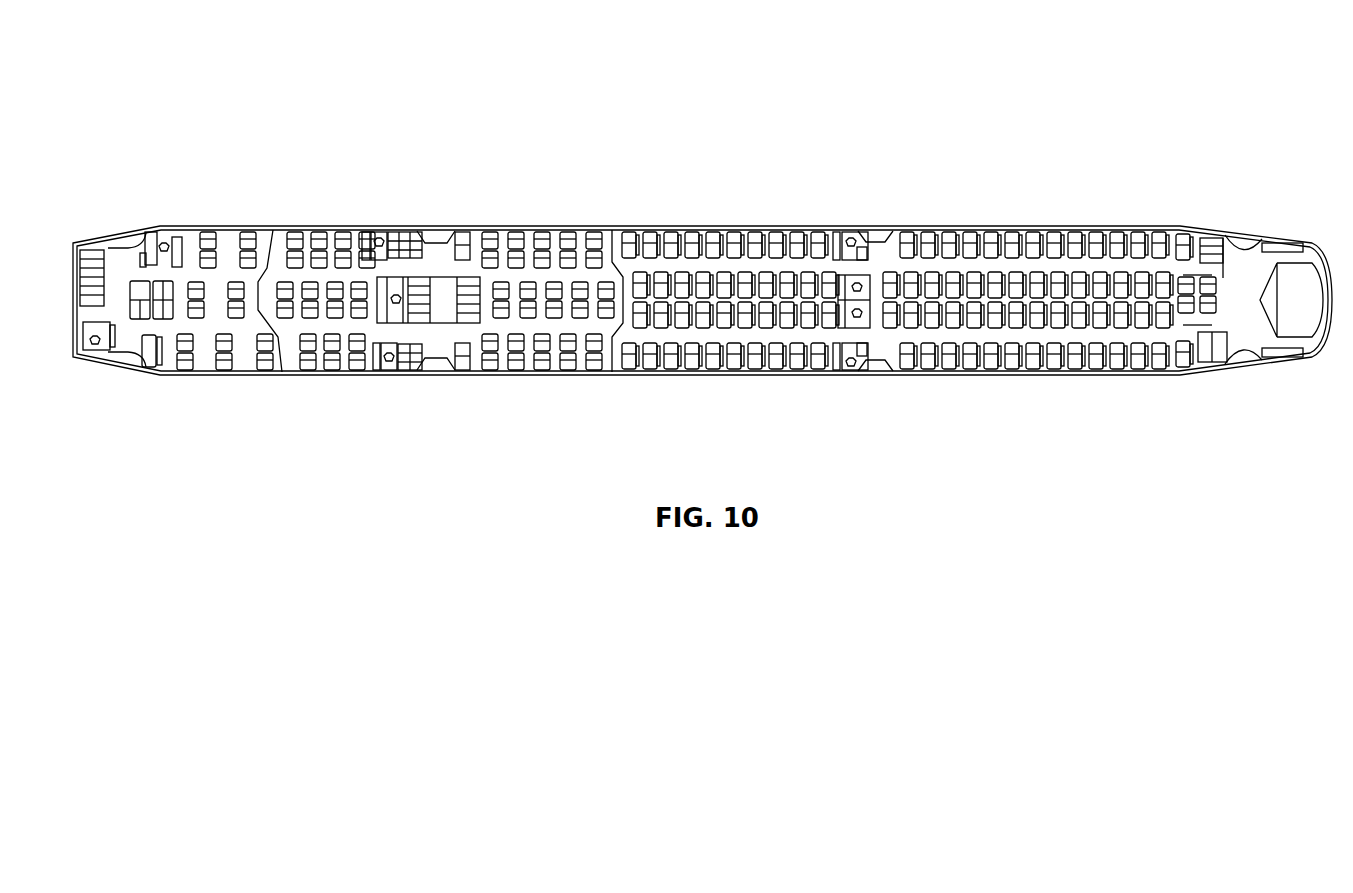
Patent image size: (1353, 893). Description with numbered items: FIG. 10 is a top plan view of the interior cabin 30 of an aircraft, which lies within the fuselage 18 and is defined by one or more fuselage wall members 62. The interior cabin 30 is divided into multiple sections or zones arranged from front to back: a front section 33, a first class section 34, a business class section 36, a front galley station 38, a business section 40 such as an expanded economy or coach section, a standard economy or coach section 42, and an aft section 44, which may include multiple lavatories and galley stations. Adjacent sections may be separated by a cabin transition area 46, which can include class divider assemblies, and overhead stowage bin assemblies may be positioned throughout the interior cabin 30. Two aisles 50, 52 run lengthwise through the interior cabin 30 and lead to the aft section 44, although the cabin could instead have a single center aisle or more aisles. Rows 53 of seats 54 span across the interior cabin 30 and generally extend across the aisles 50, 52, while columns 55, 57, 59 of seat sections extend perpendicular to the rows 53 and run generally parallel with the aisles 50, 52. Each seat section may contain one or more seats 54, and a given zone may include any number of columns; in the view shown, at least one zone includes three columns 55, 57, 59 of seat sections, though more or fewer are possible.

The interior cabin 30 is at (217, 128).
The fuselage 18 is at (557, 188).
The cabin transition area 46 is at (150, 225).
The business class section 36 is at (307, 224).
The fuselage wall member 62 is at (507, 223).
The column of seat sections 59 is at (627, 238).
The column of seat sections 57 is at (638, 276).
The standard economy or coach section 42 is at (684, 222).
The aisle 50 is at (1041, 272).
The aft section 44 is at (1249, 231).
The front section 33 is at (135, 388).
The first class section 34 is at (240, 381).
The front galley station 38 is at (434, 381).
The business section 40 is at (534, 381).
The column of seat sections 55 is at (594, 358).
The seat 54 is at (628, 368).
The row of seats 53 is at (638, 381).
The aisle 52 is at (1059, 332).